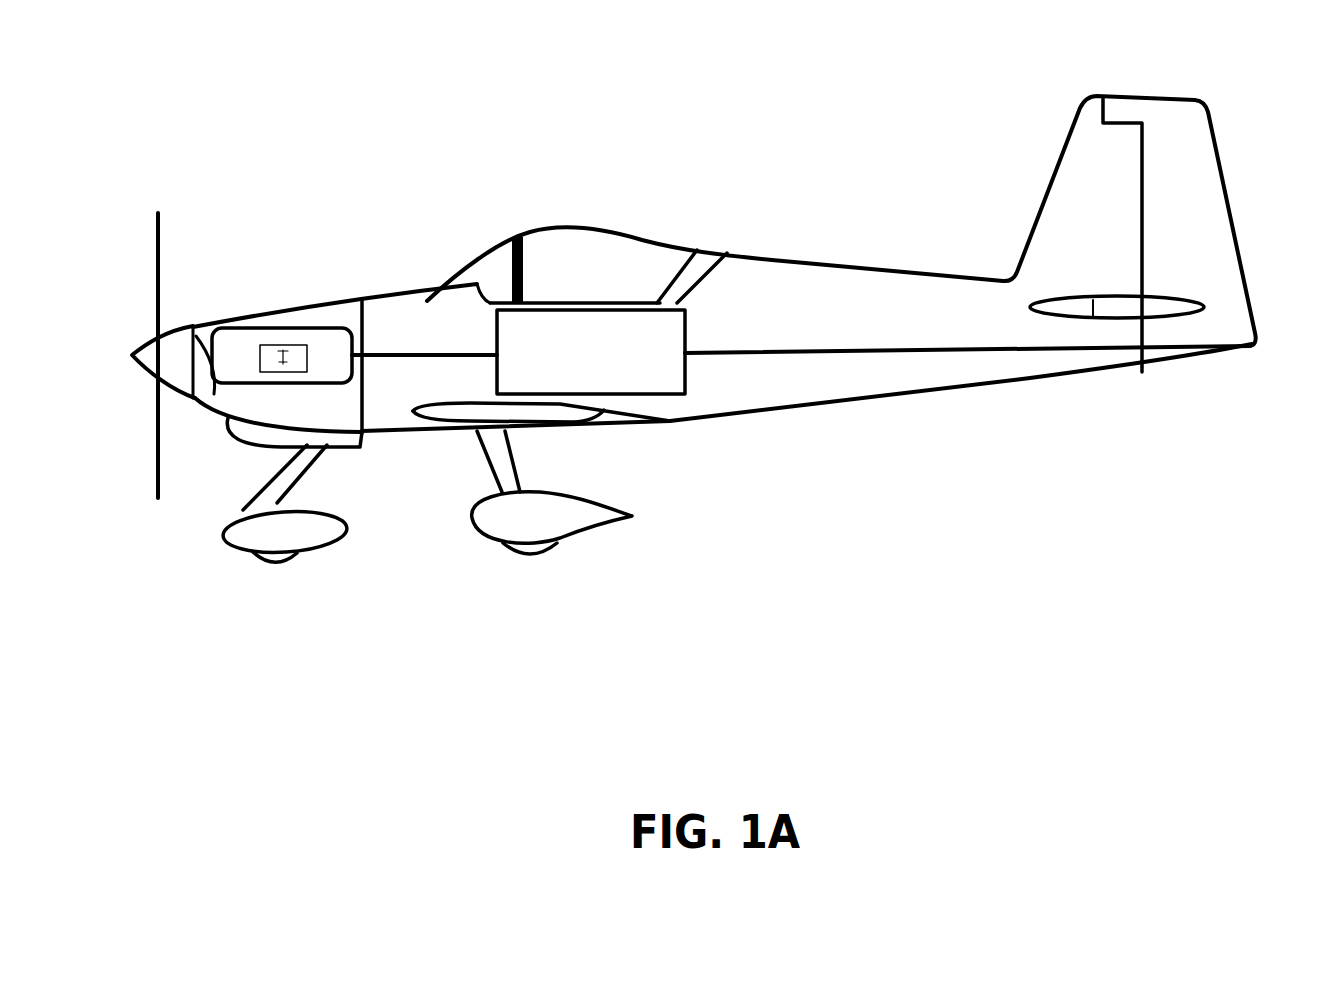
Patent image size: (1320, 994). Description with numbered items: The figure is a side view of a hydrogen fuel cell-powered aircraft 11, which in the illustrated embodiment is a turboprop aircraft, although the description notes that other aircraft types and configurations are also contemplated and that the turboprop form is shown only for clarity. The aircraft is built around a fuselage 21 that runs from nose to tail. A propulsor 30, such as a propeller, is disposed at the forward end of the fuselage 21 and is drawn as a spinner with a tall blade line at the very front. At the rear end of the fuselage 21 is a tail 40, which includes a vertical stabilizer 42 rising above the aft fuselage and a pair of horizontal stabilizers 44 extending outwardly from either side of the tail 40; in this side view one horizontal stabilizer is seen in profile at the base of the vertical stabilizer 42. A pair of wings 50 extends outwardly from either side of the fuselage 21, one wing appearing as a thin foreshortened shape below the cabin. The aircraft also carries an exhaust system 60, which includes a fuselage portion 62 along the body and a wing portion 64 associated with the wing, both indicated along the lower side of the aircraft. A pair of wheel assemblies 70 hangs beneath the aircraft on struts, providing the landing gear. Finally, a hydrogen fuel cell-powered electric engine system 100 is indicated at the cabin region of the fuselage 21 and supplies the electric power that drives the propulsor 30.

The hydrogen fuel cell-powered aircraft 11 is at (705, 358).
The fuselage 21 is at (735, 388).
The propulsor 30 is at (169, 352).
The tail 40 is at (1077, 285).
The vertical stabilizer 42 is at (1093, 177).
The horizontal stabilizers 44 is at (1108, 312).
The wings 50 is at (607, 427).
The exhaust system 60 is at (845, 340).
The fuselage portion 62 is at (935, 351).
The wing portion 64 is at (563, 420).
The wheel assemblies 70 is at (303, 535).
The hydrogen fuel cell-powered electric engine system 100 is at (562, 300).